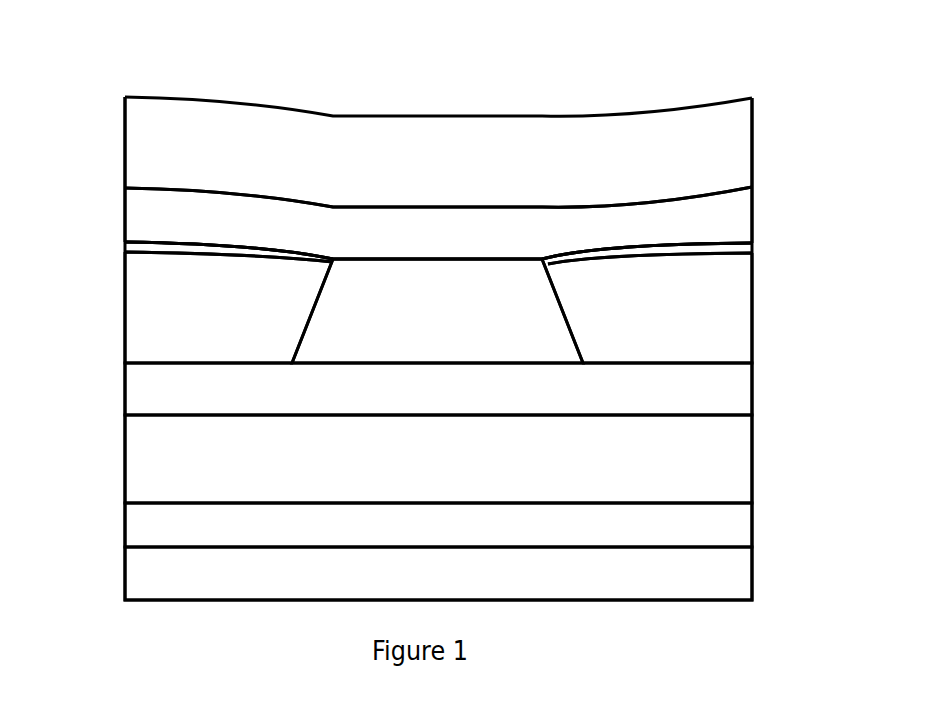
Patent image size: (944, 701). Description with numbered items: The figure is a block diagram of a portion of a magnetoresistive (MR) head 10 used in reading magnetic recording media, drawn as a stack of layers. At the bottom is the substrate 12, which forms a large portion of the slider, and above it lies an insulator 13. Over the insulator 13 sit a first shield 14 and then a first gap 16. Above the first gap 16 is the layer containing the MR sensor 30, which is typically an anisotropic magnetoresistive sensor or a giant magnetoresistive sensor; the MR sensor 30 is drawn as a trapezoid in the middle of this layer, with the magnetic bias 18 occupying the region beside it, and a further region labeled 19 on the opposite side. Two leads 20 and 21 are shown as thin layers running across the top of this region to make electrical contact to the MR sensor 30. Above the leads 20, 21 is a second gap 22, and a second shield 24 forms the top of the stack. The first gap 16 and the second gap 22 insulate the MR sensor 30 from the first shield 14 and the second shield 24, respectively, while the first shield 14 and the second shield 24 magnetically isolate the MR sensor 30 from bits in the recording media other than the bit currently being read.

The magnetoresistive head 10 is at (436, 67).
The substrate 12 is at (752, 580).
The insulator 13 is at (752, 512).
The first shield 14 is at (752, 450).
The first gap 16 is at (752, 388).
The magnetic bias 18 is at (752, 310).
The second lead / hard bias layer 19 is at (125, 292).
The lead 20 is at (752, 244).
The lead 21 is at (125, 247).
The second gap 22 is at (752, 205).
The second shield 24 is at (752, 130).
The MR sensor 30 is at (314, 307).